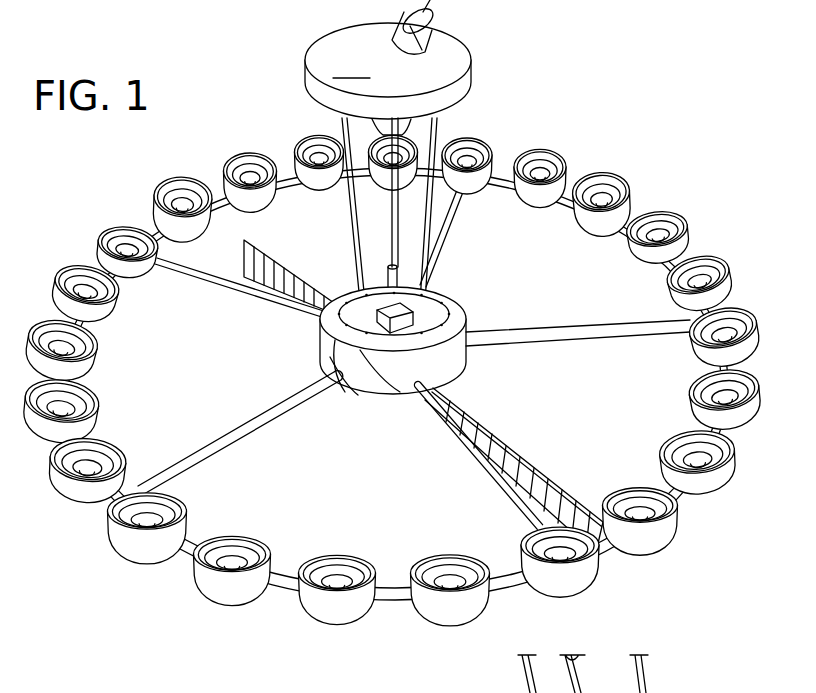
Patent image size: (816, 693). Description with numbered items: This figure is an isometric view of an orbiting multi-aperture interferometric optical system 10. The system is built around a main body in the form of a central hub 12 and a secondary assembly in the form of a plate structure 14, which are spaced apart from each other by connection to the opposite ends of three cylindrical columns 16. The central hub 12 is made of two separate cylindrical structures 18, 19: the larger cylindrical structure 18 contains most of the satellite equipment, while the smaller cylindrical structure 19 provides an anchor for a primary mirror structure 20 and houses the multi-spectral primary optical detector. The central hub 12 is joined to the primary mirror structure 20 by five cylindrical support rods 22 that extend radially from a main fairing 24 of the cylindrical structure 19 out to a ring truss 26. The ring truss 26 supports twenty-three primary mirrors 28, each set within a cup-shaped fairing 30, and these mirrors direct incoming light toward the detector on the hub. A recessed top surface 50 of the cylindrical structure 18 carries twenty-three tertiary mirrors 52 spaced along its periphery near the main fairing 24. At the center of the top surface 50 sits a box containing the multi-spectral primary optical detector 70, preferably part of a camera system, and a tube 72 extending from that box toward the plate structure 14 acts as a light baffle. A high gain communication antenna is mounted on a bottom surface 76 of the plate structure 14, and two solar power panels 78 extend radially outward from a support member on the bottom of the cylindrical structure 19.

The orbiting multi-aperture interferometric optical system 10 is at (583, 108).
The central hub 12 is at (468, 307).
The plate structure 14 is at (481, 49).
The cylindrical columns 16 is at (348, 196).
The cylindrical structure 18 is at (387, 367).
The cylindrical structure 19 is at (466, 377).
The primary mirror structure 20 is at (203, 618).
The cylindrical support rods 22 is at (184, 275).
The main fairing 24 is at (352, 385).
The ring truss 26 is at (265, 600).
The primary mirrors 28 is at (250, 166).
The cup-shaped fairing 30 is at (253, 200).
The recessed top surface 50 is at (322, 358).
The tertiary mirrors 52 is at (356, 317).
The multi-spectral primary optical detector 70 is at (343, 393).
The tube 72 is at (385, 265).
The bottom surface 76 is at (351, 63).
The solar power panels 78 is at (307, 327).